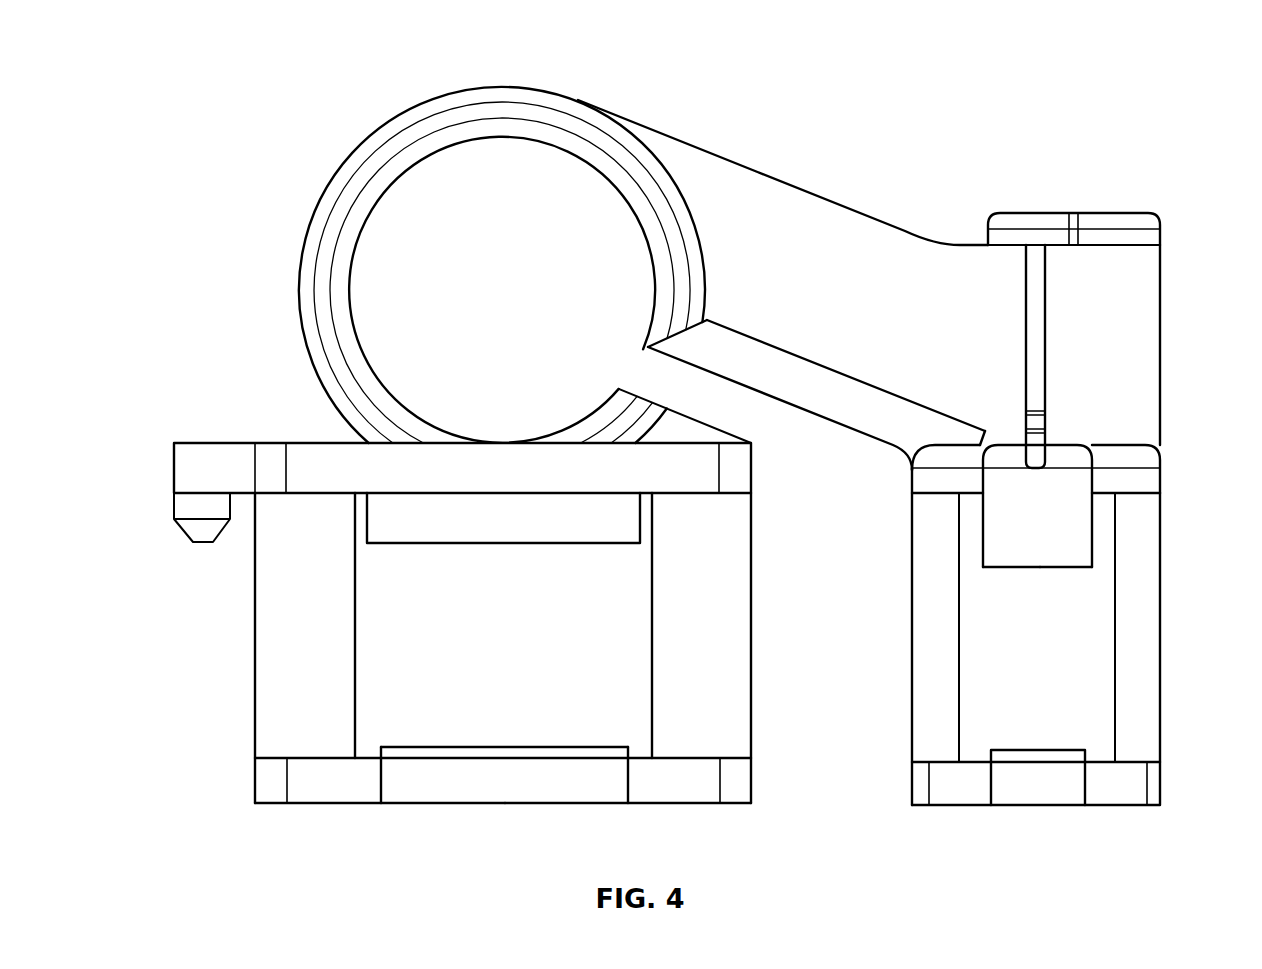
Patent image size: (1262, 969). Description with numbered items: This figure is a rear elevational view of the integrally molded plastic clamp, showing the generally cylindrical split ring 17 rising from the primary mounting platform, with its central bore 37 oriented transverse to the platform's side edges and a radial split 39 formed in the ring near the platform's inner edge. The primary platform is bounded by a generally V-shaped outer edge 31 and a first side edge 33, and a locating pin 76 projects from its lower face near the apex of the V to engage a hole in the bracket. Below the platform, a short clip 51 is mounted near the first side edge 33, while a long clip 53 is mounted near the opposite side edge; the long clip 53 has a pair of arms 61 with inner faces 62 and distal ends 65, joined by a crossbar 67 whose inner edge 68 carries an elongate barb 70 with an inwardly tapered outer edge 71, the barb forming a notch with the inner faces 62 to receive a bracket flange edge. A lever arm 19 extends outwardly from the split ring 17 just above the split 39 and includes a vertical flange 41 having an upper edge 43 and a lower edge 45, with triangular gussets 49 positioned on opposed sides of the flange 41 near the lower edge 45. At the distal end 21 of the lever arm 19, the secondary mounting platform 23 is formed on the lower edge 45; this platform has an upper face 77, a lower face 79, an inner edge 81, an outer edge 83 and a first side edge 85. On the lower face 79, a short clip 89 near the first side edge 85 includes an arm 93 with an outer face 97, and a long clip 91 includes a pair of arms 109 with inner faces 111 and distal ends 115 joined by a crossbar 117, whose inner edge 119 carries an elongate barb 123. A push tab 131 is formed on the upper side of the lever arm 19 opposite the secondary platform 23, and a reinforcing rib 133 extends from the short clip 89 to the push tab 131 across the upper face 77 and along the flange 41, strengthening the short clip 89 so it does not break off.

The split ring 17 is at (426, 100).
The lever arm 19 is at (701, 148).
The distal end 21 is at (1161, 282).
The secondary mounting platform 23 is at (1118, 445).
The outer edge 31 is at (174, 456).
The first side edge 33 is at (709, 462).
The central bore 37 is at (478, 128).
The radial split 39 is at (640, 394).
The vertical flange 41 is at (840, 292).
The upper edge 43 is at (843, 206).
The lower edge 45 is at (818, 410).
The triangular gussets 49 is at (736, 331).
The short clip 51 is at (495, 543).
The long clip 53 is at (752, 740).
The arms 61 is at (255, 600).
The inner faces 62 is at (288, 607).
The distal ends 65 is at (300, 803).
The crossbar 67 is at (462, 803).
The inner edge 68 is at (571, 803).
The elongate barb 70 is at (451, 747).
The outer edge 71 is at (412, 760).
The locating pin 76 is at (174, 507).
The upper face 77 is at (1060, 445).
The lower face 79 is at (1141, 497).
The inner edge 81 is at (912, 472).
The outer edge 83 is at (1161, 472).
The first side edge 85 is at (953, 478).
The short clip 89 is at (1000, 568).
The long clip 91 is at (1161, 656).
The arm 93 is at (1060, 568).
The outer face 97 is at (1018, 534).
The arms 109 is at (960, 695).
The inner faces 111 is at (933, 612).
The distal ends 115 is at (940, 805).
The crossbar 117 is at (1046, 805).
The inner edge 119 is at (1110, 800).
The elongate barb 123 is at (1040, 750).
The push tab 131 is at (1112, 213).
The reinforcing rib 133 is at (1046, 310).